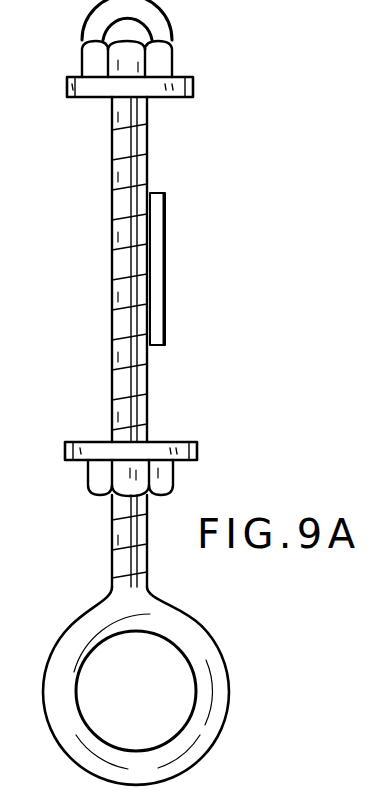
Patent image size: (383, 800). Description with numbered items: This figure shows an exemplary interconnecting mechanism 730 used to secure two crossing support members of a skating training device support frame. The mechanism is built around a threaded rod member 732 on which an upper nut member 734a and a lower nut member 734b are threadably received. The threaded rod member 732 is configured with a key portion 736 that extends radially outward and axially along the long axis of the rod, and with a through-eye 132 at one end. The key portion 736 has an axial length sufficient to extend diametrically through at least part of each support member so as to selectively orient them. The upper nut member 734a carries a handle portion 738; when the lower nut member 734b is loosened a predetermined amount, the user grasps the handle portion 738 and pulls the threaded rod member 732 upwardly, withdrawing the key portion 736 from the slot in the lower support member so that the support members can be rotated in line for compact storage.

The interconnecting mechanism 730 is at (263, 345).
The handle portion 738 is at (170, 25).
The upper nut member 734a is at (173, 63).
The threaded rod member 732 is at (113, 266).
The key portion 736 is at (166, 234).
The lower nut member 734b is at (198, 448).
The through-eye 132 is at (56, 618).